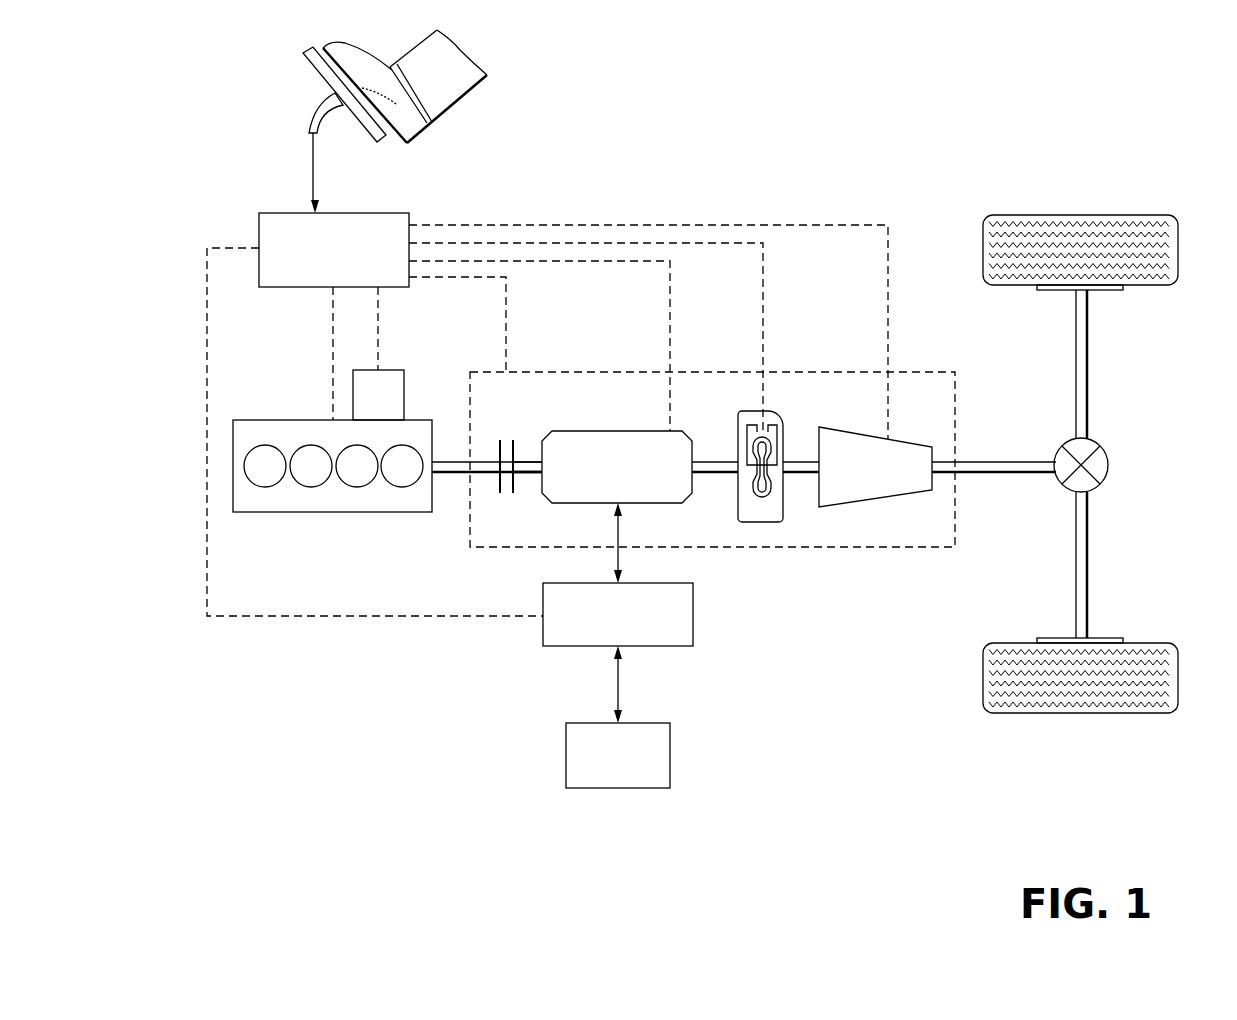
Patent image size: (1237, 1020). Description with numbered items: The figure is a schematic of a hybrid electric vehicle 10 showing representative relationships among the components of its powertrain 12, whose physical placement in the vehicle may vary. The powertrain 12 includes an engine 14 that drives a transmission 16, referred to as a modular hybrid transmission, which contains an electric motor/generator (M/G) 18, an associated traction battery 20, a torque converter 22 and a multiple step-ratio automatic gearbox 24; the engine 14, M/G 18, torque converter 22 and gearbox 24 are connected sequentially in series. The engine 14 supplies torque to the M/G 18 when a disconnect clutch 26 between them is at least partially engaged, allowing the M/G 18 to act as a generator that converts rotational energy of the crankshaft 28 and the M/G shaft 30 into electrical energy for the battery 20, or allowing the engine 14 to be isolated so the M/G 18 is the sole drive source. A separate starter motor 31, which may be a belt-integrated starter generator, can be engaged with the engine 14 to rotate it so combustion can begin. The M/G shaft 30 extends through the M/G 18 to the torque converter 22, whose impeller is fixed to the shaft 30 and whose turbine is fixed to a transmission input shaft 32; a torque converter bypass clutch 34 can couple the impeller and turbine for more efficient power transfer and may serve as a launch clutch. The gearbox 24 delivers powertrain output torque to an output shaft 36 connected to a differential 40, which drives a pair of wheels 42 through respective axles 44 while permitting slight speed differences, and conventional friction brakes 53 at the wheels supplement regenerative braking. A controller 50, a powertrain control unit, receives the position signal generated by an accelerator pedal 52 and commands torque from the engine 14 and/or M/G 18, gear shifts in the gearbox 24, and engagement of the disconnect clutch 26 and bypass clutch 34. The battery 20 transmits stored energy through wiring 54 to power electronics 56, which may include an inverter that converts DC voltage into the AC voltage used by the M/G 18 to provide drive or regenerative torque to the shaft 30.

The hybrid electric vehicle 10 is at (866, 130).
The powertrain 12 is at (446, 664).
The engine 14 is at (288, 420).
The transmission 16 is at (728, 370).
The electric motor/generator (M/G) 18 is at (618, 431).
The traction battery 20 is at (565, 752).
The torque converter 22 is at (760, 522).
The gearbox 24 is at (875, 497).
The disconnect clutch 26 is at (516, 497).
The crankshaft 28 is at (463, 462).
The M/G shaft 30 is at (527, 462).
The starter motor 31 is at (393, 370).
The transmission input shaft 32 is at (797, 458).
The torque converter bypass clutch 34 is at (769, 420).
The transmission output shaft 36 is at (1010, 462).
The differential 40 is at (1110, 462).
The wheels 42 is at (1082, 215).
The axles 44 is at (1090, 362).
The controller (powertrain control unit) 50 is at (282, 213).
The accelerator pedal 52 is at (316, 90).
The friction brakes 53 is at (1105, 290).
The wiring 54 is at (617, 690).
The power electronics 56 is at (697, 612).